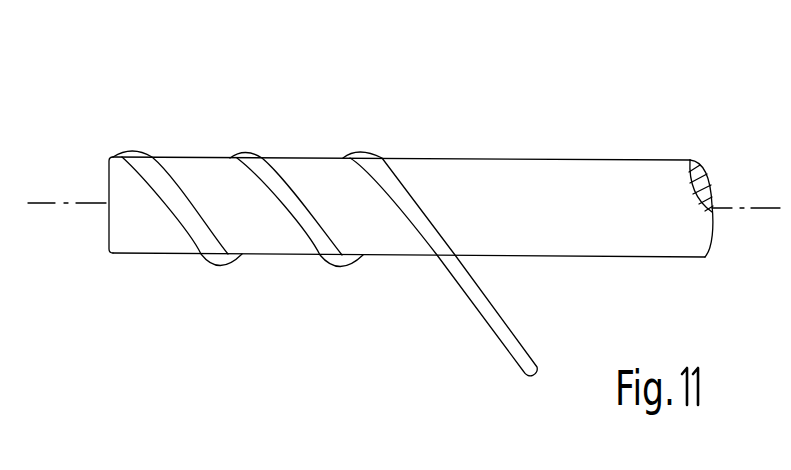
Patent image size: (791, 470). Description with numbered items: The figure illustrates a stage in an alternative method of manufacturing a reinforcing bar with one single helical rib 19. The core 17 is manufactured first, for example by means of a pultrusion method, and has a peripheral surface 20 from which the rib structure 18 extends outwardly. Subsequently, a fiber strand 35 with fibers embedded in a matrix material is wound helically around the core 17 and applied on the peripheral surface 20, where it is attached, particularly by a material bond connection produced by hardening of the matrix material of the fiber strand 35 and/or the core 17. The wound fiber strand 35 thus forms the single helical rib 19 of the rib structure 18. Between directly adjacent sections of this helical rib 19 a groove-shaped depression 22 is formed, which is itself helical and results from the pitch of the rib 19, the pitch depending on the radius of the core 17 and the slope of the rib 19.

The core 17 is at (703, 170).
The rib structure 18 is at (404, 226).
The rib 19 is at (325, 247).
The peripheral surface 20 is at (404, 163).
The groove-shaped depression 22 is at (204, 177).
The fiber strand 35 is at (488, 325).